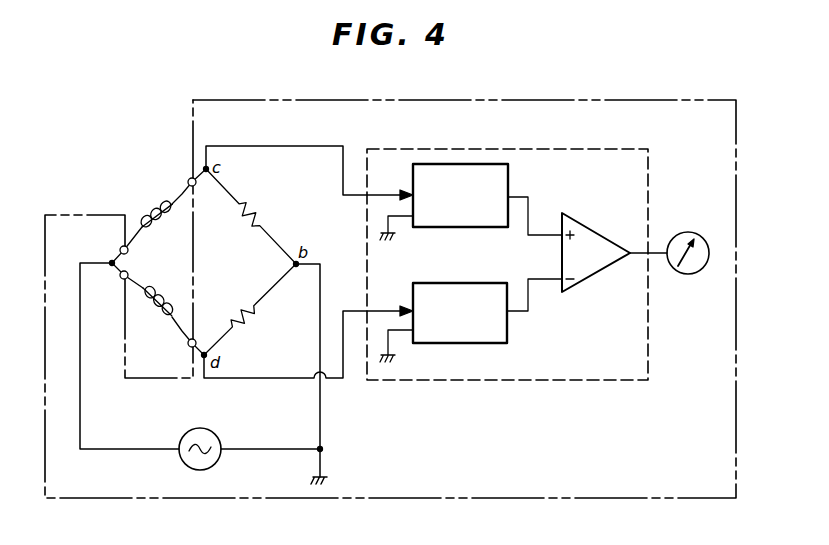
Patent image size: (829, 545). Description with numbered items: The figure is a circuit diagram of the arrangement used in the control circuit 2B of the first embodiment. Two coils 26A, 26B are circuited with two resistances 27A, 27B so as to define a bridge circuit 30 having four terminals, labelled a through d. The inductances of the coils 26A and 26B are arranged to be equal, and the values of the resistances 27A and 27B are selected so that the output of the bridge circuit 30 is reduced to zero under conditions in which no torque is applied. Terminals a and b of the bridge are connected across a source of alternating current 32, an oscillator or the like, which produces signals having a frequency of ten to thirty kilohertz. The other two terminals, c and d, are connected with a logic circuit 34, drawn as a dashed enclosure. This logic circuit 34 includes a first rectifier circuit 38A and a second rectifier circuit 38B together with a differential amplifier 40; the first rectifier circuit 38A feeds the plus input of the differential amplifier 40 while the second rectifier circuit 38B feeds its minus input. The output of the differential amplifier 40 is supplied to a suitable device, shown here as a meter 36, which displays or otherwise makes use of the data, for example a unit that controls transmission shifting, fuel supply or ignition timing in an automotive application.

The control circuit 2B is at (231, 100).
The bridge circuit 30 is at (139, 245).
The coil 26A is at (143, 217).
The coil 26B is at (158, 292).
The resistance 27A is at (256, 213).
The resistance 27B is at (257, 328).
The source of alternating current 32 is at (190, 430).
The logic circuit 34 is at (507, 272).
The indicating meter 36 is at (686, 232).
The first rectifier circuit 38A is at (451, 164).
The second rectifier circuit 38B is at (451, 283).
The differential amplifier 40 is at (597, 231).